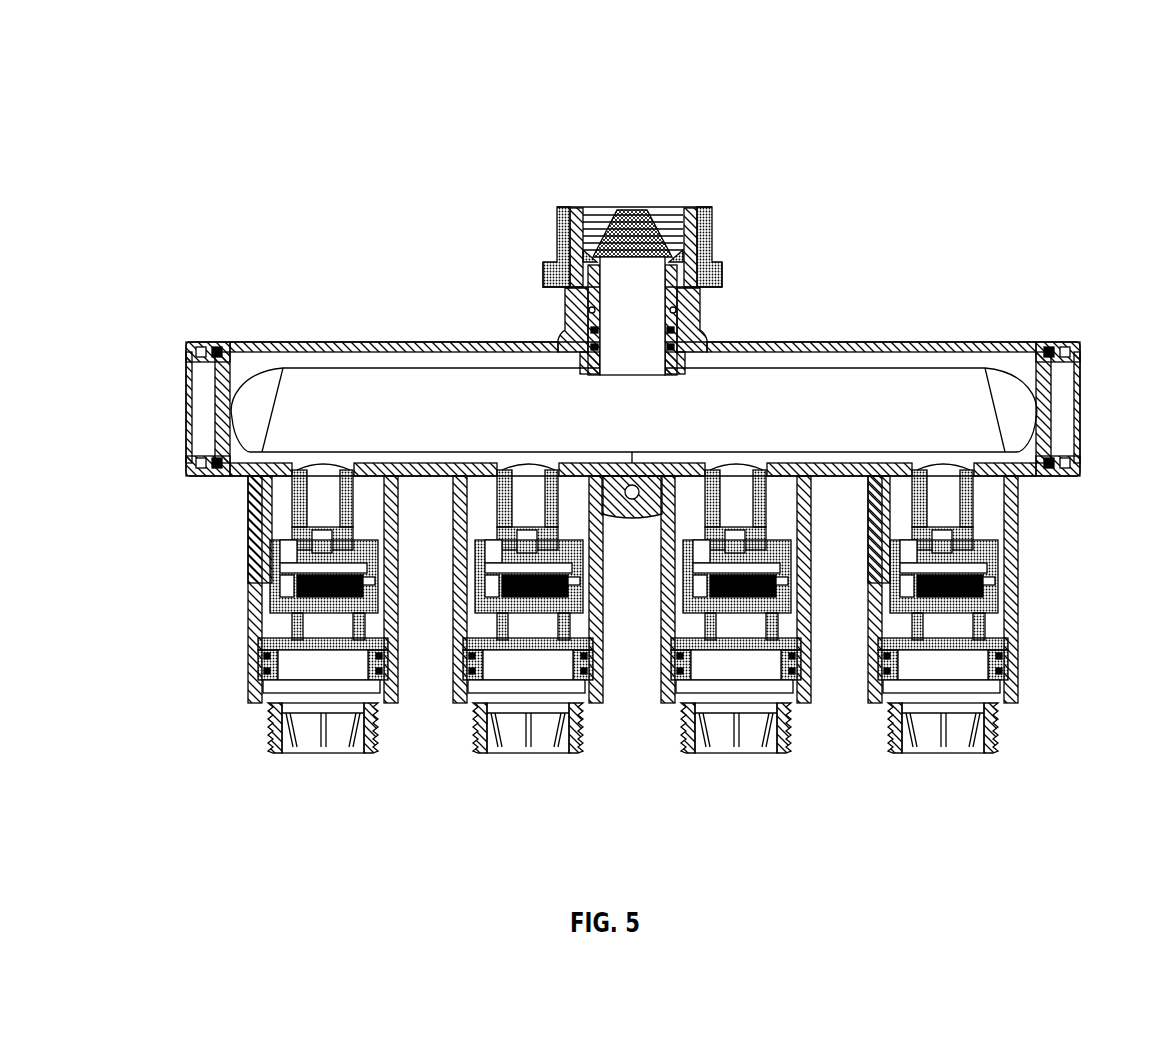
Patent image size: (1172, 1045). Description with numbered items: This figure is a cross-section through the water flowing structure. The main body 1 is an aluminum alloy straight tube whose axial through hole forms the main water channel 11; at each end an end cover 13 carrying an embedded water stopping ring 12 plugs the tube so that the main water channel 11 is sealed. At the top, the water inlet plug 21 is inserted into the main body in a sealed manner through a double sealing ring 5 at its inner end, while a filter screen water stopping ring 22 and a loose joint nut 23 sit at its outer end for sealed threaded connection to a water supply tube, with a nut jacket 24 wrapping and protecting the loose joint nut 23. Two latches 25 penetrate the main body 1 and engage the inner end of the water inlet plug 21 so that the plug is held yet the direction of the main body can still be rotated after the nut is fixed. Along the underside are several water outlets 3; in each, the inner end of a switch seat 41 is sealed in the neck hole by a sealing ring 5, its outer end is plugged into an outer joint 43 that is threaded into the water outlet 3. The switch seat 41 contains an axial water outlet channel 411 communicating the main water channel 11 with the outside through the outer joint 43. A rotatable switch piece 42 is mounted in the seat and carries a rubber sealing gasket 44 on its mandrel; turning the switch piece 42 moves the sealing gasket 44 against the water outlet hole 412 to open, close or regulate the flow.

The main body 1 is at (935, 345).
The main water channel 11 is at (843, 345).
The water stopping ring 12 is at (232, 340).
The end cover 13 is at (197, 340).
The double sealing ring 5 is at (580, 322).
The water inlet plug 21 is at (655, 217).
The filter screen water stopping ring 22 is at (577, 217).
The loose joint nut 23 is at (545, 220).
The nut jacket 24 is at (710, 300).
The latch 25 is at (703, 303).
The water outlet 3 is at (810, 600).
The switch seat 41 is at (452, 657).
The water outlet channel 411 is at (952, 515).
The water outlet hole 412 is at (522, 608).
The switch piece 42 is at (601, 608).
The outer joint 43 is at (578, 728).
The sealing gasket 44 is at (990, 715).